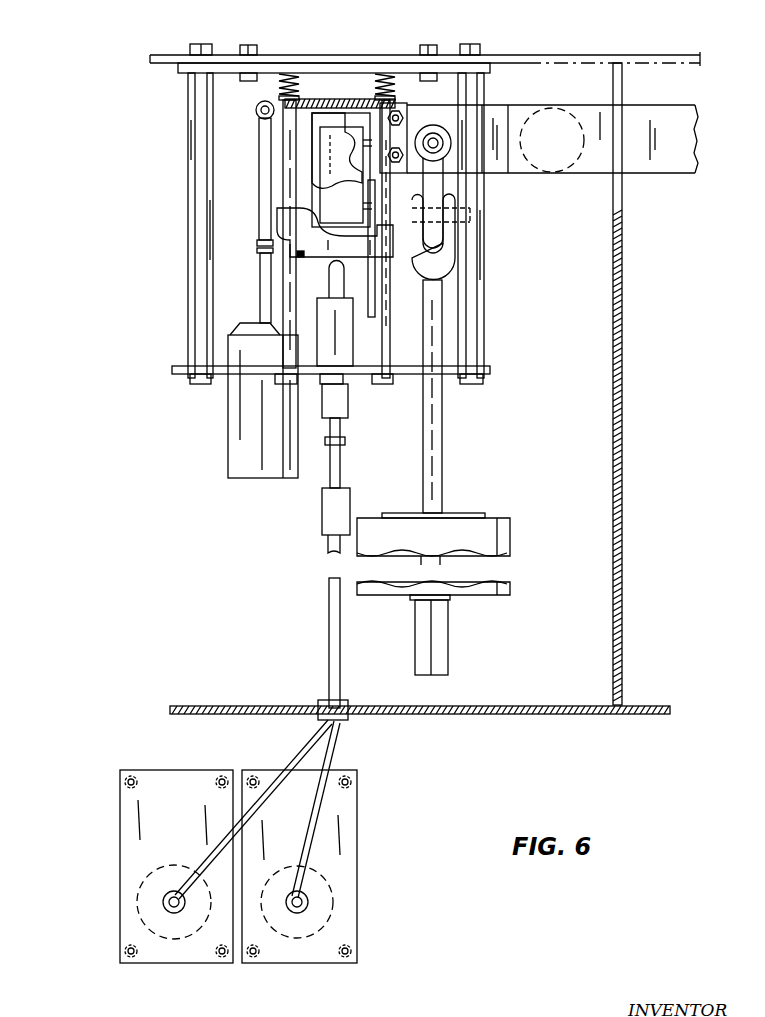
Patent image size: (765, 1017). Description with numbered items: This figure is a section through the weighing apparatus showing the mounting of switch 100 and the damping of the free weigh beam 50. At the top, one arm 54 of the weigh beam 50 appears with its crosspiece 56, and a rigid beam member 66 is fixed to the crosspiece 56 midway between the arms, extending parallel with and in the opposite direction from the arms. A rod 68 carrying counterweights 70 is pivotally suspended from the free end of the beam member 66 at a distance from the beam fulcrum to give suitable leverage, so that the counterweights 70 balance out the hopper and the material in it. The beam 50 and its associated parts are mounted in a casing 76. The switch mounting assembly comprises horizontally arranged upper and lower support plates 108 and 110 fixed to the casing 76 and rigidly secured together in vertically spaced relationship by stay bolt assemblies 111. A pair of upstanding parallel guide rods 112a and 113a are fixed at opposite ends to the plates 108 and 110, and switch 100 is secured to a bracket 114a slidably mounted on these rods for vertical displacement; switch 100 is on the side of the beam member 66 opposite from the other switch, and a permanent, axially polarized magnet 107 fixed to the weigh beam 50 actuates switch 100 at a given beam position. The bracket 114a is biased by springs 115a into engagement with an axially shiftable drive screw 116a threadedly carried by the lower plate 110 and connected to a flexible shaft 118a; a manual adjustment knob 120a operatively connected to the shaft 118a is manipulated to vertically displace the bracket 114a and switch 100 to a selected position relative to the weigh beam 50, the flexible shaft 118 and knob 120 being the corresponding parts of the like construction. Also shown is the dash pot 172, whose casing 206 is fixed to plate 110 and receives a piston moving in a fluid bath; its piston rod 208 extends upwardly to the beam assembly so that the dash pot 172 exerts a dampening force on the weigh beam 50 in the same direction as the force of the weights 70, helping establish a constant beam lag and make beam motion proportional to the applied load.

The free weigh beam 50 is at (521, 182).
The arm 54 is at (641, 149).
The crosspiece 56 is at (582, 157).
The rigid beam member 66 is at (493, 113).
The rod 68 is at (430, 480).
The counterweights 70 is at (500, 540).
The casing 76 is at (547, 713).
The switch 100 is at (330, 127).
The permanent magnet 107 is at (330, 193).
The upper support plate 108 is at (187, 68).
The lower support plate 110 is at (185, 375).
The stay bolt assemblies 111 is at (197, 315).
The guide rod 112a is at (287, 276).
The guide rod 113a is at (382, 328).
The bracket 114a is at (320, 100).
The springs 115a is at (272, 79).
The drive screw 116a is at (333, 277).
The flexible shaft 118 is at (327, 757).
The flexible shaft 118a is at (330, 548).
The manual adjustment knob 120 is at (298, 940).
The manual adjustment knob 120a is at (167, 940).
The dash pot 172 is at (224, 452).
The casing 206 is at (245, 408).
The piston rod 208 is at (265, 178).